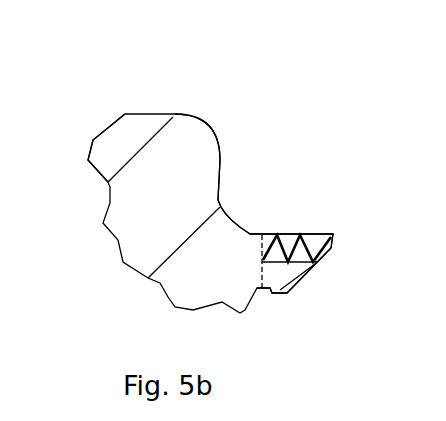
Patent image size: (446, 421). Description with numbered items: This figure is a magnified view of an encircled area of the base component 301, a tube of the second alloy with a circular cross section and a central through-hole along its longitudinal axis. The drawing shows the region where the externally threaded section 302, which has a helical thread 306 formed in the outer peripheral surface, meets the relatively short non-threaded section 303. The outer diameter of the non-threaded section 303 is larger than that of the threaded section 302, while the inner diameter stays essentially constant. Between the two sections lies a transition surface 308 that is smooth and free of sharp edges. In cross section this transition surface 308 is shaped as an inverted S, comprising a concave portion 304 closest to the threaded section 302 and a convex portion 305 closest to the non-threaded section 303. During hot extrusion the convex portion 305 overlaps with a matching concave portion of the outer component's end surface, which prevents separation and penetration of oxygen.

The base component 301 is at (150, 102).
The externally threaded section 302 is at (284, 234).
The non-threaded section 303 is at (125, 145).
The concave portion 304 is at (240, 223).
The convex portion 305 is at (212, 133).
The helical thread 306 is at (285, 243).
The transition surface 308 is at (220, 168).